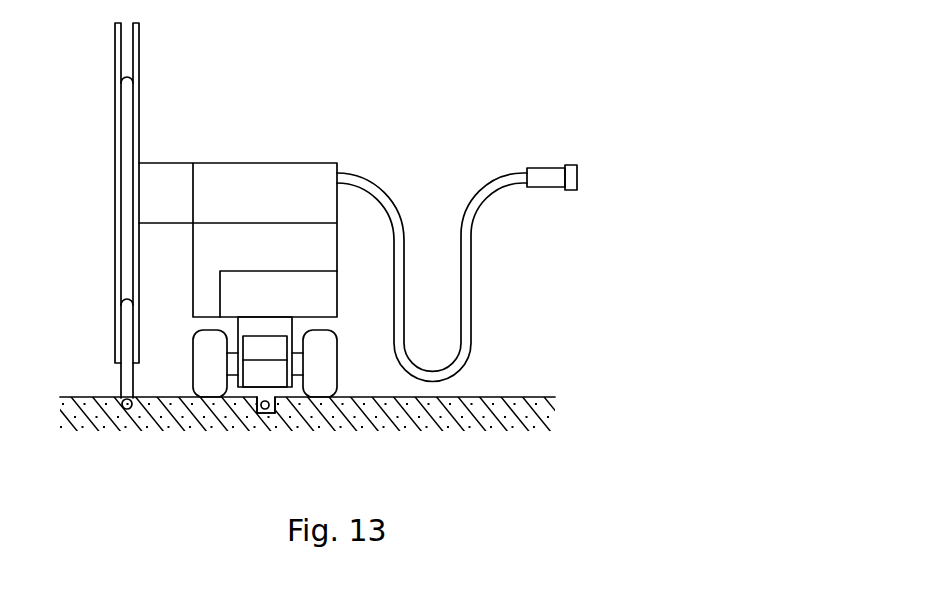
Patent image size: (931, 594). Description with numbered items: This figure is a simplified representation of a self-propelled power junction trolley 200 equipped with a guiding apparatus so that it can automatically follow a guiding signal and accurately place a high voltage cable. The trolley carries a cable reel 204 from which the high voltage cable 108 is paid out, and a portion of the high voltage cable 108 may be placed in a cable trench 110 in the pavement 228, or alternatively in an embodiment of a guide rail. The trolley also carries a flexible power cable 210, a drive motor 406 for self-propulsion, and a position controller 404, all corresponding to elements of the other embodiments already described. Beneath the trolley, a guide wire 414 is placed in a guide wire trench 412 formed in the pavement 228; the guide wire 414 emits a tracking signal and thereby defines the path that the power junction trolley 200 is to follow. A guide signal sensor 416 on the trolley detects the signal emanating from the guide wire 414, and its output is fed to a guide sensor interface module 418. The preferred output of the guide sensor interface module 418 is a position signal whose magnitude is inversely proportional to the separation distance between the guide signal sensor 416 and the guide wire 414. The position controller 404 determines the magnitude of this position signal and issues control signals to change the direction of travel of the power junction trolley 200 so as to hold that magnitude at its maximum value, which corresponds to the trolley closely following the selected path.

The power junction trolley 200 is at (477, 62).
The cable reel 204 is at (115, 58).
The high voltage cable 108 is at (122, 380).
The cable trench 110 is at (121, 417).
The position controller 404 is at (243, 270).
The drive motor 406 is at (293, 330).
The guide sensor interface module 418 is at (242, 335).
The guide signal sensor 416 is at (277, 375).
The flexible power cable 210 is at (392, 198).
The pavement 228 is at (548, 412).
The guide wire trench 412 is at (255, 414).
The guide wire 414 is at (262, 414).